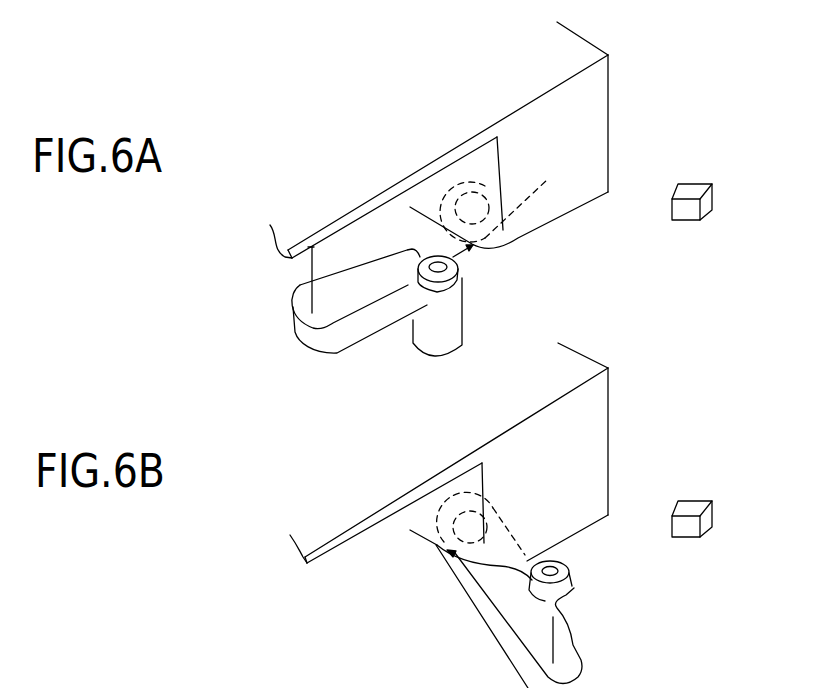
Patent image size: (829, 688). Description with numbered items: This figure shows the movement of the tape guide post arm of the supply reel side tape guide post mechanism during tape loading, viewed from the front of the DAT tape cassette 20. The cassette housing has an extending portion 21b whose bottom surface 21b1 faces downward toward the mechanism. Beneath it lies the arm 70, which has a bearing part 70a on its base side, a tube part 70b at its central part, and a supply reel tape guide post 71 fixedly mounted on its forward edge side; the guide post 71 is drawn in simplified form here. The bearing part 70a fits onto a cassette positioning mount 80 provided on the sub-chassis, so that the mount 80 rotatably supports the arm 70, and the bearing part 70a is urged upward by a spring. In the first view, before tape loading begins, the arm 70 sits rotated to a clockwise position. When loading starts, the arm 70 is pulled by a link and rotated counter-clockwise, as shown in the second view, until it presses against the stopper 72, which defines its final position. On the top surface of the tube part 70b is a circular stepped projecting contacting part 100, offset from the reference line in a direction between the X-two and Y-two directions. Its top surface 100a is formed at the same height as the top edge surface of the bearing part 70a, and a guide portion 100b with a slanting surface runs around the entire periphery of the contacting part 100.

In FIG. 6A, the DAT tape cassette 20 is at (597, 40).
In FIG. 6B, the DAT tape cassette 20 is at (588, 353).
In FIG. 6A, the extending portion 21b is at (610, 128).
In FIG. 6B, the extending portion 21b is at (608, 435).
In FIG. 6A, the bottom surface 21b1 is at (549, 208).
In FIG. 6A, the stopper 72 is at (710, 190).
In FIG. 6B, the stopper 72 is at (710, 514).
In FIG. 6A, the cassette positioning mount 80 is at (485, 186).
In FIG. 6A, the arm 70 is at (372, 325).
In FIG. 6B, the arm 70 is at (490, 633).
In FIG. 6A, the bearing part 70a is at (543, 179).
In FIG. 6A, the tube part 70b is at (437, 342).
In FIG. 6A, the supply reel tape guide post 71 is at (311, 275).
In FIG. 6B, the supply reel tape guide post 71 is at (557, 636).
In FIG. 6A, the circular stepped projecting contacting part 100 is at (462, 277).
In FIG. 6B, the circular stepped projecting contacting part 100 is at (566, 568).
In FIG. 6A, the top surface 100a is at (410, 252).
In FIG. 6A, the guide portion 100b is at (461, 278).
In FIG. 6B, the guide portion 100b is at (572, 578).